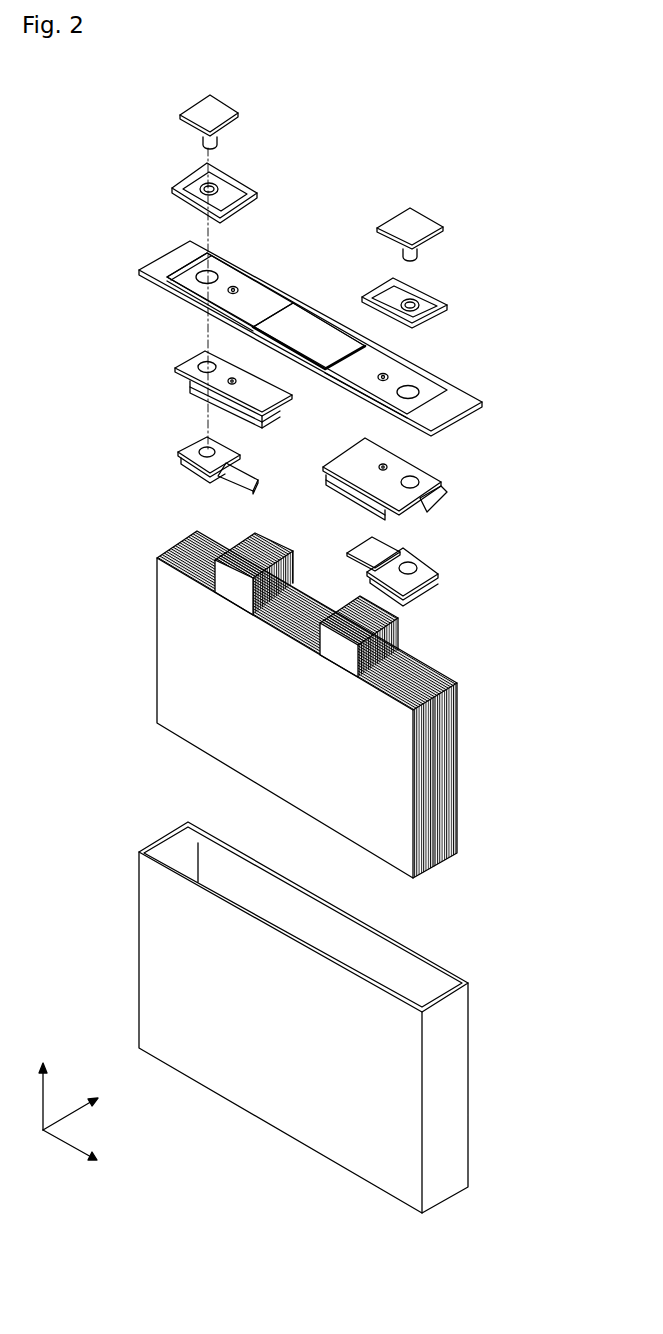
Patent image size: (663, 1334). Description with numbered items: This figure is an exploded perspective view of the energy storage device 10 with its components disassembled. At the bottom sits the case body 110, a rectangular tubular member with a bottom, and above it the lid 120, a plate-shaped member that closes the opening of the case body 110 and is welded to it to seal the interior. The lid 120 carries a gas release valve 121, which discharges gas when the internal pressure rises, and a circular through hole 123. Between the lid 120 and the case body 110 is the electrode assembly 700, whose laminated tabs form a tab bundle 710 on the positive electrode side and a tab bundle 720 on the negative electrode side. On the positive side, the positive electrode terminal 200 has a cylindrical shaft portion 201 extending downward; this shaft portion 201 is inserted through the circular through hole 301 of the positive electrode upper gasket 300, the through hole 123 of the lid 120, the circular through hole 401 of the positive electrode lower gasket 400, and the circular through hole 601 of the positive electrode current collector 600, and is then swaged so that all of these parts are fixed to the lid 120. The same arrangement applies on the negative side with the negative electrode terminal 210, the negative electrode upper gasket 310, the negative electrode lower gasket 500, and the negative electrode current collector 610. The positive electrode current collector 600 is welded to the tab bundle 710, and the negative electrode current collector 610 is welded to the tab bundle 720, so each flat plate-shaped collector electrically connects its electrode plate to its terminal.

The energy storage device 10 is at (277, 641).
The case body 110 is at (135, 937).
The lid 120 is at (279, 326).
The gas release valve 121 is at (317, 327).
The circular through hole 123 is at (208, 282).
The positive electrode terminal 200 is at (240, 111).
The shaft portion 201 is at (222, 138).
The negative electrode terminal 210 is at (418, 222).
The positive electrode upper gasket 300 is at (202, 184).
The circular through hole 301 is at (215, 188).
The negative electrode upper gasket 310 is at (440, 294).
The positive electrode lower gasket 400 is at (188, 387).
The circular through hole 401 is at (205, 370).
The negative electrode lower gasket 500 is at (433, 469).
The positive electrode current collector 600 is at (172, 468).
The circular through hole 601 is at (207, 455).
The negative electrode current collector 610 is at (440, 561).
The electrode assembly 700 is at (307, 704).
The tab bundle 710 is at (230, 590).
The tab bundle 720 is at (337, 655).